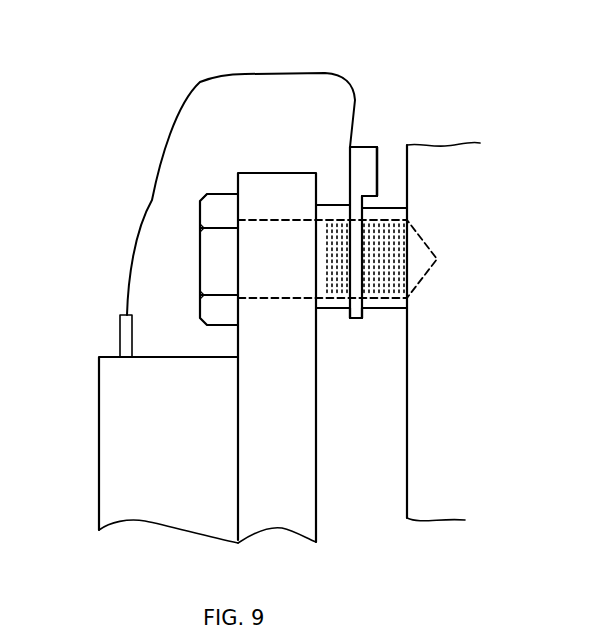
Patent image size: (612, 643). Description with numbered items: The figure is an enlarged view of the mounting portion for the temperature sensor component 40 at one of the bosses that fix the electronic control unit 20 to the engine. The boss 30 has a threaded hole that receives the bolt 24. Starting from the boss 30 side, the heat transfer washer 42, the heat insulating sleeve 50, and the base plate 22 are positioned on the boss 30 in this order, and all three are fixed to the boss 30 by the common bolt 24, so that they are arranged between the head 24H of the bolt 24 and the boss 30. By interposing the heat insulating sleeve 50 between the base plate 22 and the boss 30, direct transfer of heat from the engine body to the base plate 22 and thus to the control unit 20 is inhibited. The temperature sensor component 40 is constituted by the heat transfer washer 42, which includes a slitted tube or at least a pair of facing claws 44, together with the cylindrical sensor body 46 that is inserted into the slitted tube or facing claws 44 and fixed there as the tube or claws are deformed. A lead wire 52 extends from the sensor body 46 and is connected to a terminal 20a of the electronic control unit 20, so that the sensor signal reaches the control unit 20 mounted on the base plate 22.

The electronic control unit 20 is at (99, 490).
The terminal 20a is at (120, 333).
The base plate 22 is at (272, 173).
The bolt 24 is at (280, 300).
The head of the bolt 24H is at (207, 194).
The boss 30 is at (392, 216).
The temperature sensor component 40 is at (343, 142).
The heat transfer washer 42 is at (356, 318).
The slitted tube or facing claws 44 is at (363, 167).
The sensor body 46 is at (363, 171).
The heat insulating sleeve 50 is at (327, 312).
The lead wire 52 is at (241, 73).